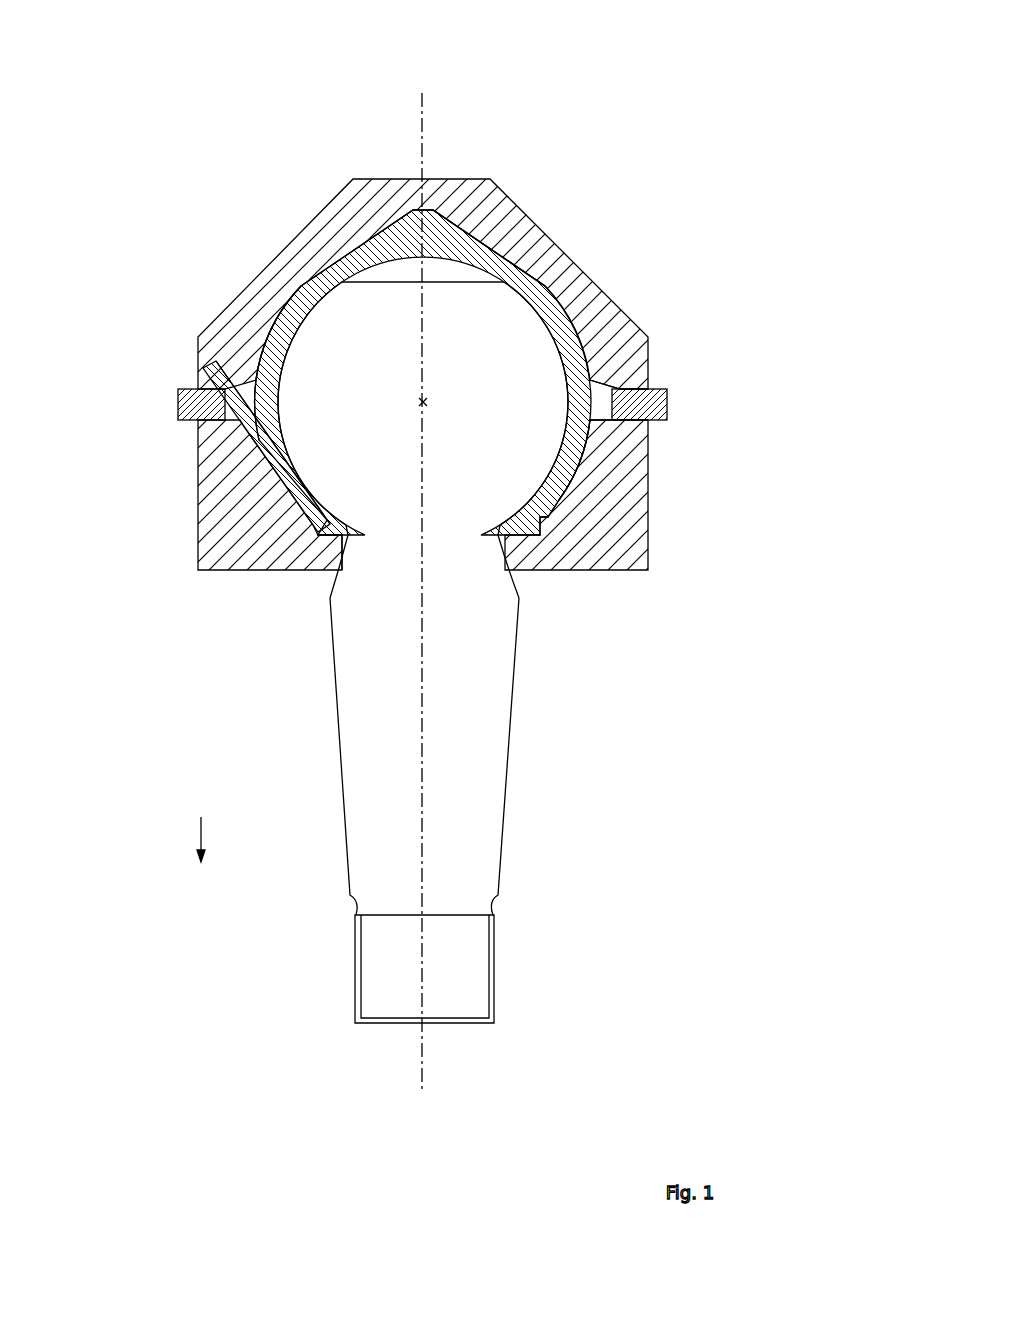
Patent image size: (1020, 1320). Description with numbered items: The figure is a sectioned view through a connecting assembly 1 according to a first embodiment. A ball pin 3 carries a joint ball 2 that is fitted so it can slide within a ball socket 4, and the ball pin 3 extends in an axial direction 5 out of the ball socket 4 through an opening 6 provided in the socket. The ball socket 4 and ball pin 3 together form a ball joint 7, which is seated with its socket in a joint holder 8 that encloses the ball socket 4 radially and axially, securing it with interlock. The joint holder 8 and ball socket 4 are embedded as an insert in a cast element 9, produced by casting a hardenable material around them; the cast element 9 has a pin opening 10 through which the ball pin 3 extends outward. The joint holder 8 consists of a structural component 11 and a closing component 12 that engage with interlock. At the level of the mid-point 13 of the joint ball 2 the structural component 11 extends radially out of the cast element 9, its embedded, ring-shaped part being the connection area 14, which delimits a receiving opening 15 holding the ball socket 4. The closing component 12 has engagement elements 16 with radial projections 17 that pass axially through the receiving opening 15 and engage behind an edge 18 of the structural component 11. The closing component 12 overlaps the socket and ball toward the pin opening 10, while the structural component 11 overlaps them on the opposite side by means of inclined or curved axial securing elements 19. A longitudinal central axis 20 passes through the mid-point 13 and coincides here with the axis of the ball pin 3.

The connecting assembly 1 is at (658, 85).
The joint ball 2 is at (337, 313).
The ball pin 3 is at (513, 745).
The ball socket 4 is at (520, 260).
The axial direction 5 is at (192, 839).
The opening 6 is at (322, 571).
The ball joint 7 is at (449, 618).
The joint holder 8 is at (592, 497).
The cast element 9 is at (327, 210).
The pin opening 10 is at (328, 603).
The structural component 11 is at (178, 403).
The closing component 12 is at (225, 484).
The mid-point 13 is at (420, 402).
The connection area 14 is at (627, 380).
The receiving opening 15 is at (607, 424).
The engagement elements 16 is at (258, 381).
The radial projection 17 is at (203, 372).
The edge 18 is at (254, 408).
The axial securing elements 19 is at (590, 293).
The longitudinal central axis 20 is at (430, 126).